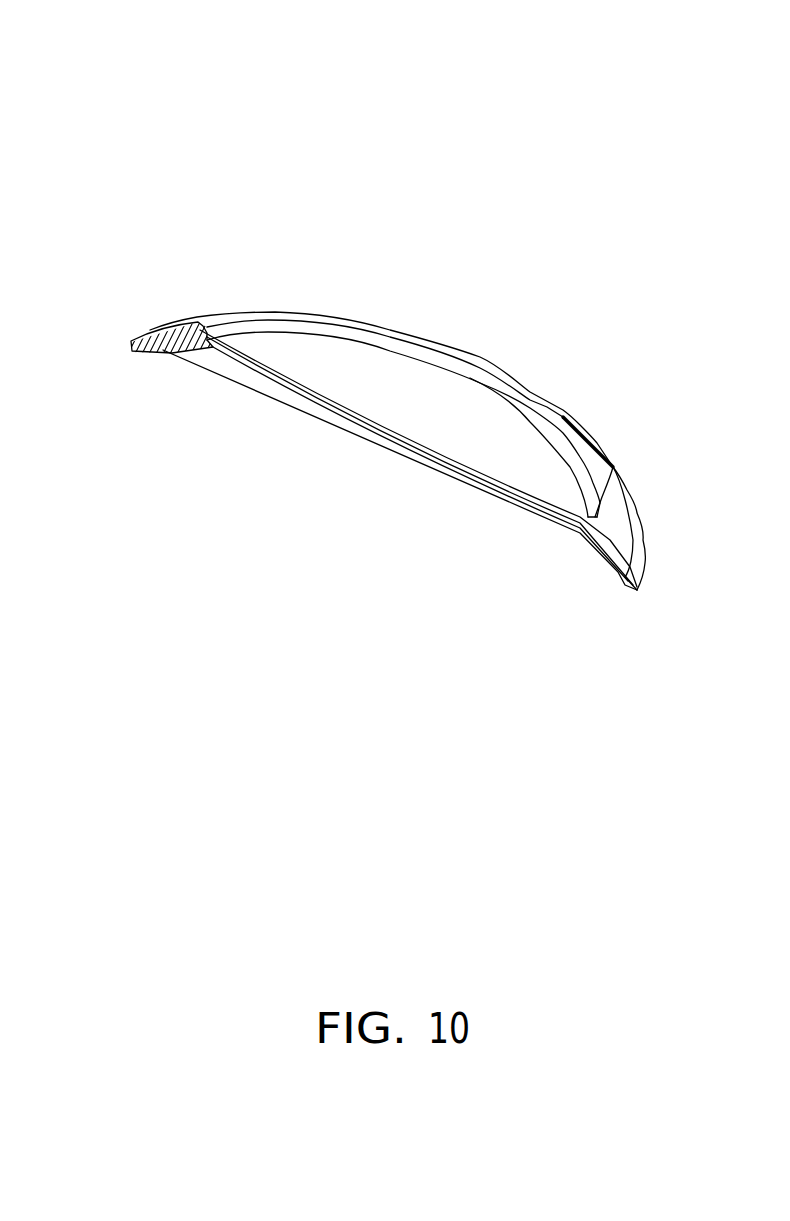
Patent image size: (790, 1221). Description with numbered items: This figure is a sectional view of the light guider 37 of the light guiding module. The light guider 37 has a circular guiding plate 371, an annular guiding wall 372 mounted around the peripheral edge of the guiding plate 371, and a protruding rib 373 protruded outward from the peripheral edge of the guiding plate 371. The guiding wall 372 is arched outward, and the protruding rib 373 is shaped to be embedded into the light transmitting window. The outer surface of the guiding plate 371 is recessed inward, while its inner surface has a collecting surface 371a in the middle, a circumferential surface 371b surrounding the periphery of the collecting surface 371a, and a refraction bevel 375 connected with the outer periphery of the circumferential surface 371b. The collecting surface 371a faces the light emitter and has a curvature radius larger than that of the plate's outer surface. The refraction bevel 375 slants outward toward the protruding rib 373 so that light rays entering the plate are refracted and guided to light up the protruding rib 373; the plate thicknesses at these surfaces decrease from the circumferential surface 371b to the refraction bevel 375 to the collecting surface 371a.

The light guider 37 is at (93, 52).
The guiding plate 371 is at (391, 460).
The collecting surface 371a is at (370, 450).
The circumferential surface 371b is at (350, 530).
The guiding wall 372 is at (625, 500).
The protruding rib 373 is at (585, 517).
The refraction bevel 375 is at (200, 355).